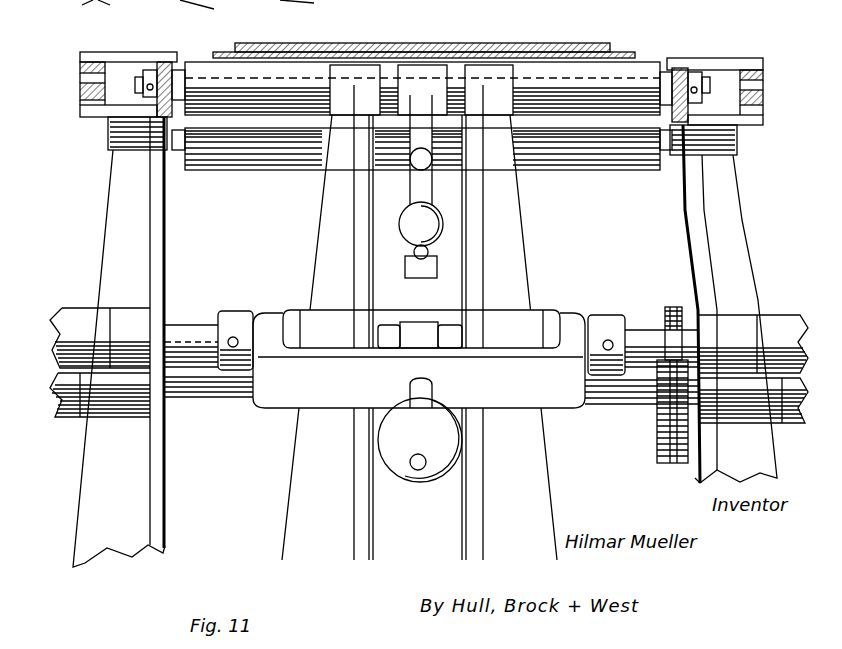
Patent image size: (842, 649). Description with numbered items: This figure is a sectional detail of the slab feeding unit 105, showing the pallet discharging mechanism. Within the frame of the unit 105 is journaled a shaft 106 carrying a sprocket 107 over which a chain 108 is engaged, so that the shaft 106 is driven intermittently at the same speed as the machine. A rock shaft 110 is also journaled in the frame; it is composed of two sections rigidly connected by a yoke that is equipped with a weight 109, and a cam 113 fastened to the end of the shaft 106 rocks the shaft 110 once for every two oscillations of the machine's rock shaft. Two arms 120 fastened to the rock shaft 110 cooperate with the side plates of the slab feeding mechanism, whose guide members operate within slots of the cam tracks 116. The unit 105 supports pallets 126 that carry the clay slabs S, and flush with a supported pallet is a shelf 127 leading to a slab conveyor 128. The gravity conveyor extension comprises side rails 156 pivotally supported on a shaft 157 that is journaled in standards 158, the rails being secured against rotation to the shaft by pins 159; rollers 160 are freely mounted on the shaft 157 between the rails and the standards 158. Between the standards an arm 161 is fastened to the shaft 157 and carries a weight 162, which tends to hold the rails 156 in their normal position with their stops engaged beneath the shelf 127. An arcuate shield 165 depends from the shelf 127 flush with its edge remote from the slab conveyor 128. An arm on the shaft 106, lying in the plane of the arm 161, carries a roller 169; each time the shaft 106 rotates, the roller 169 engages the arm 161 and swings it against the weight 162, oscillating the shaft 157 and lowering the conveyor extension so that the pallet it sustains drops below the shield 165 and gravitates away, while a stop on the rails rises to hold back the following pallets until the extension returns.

The clay slab S is at (415, 43).
The slab feeding unit 105 is at (114, 237).
The shaft 106 is at (233, 400).
The sprocket 107 is at (657, 432).
The chain 108 is at (668, 306).
The weight 109 is at (420, 430).
The rock shaft 110 is at (198, 330).
The cam 113 is at (66, 414).
The cam tracks 116 is at (80, 80).
The arms 120 is at (77, 316).
The pallets 126 is at (628, 56).
The shelf 127 is at (170, 62).
The slab conveyor 128 is at (641, 160).
The side rails 156 is at (178, 114).
The shaft 157 is at (141, 78).
The standards 158 is at (322, 221).
The pins 159 is at (680, 67).
The rollers 160 is at (213, 63).
The arm 161 is at (433, 263).
The weight 162 is at (399, 234).
The arcuate shield 165 is at (290, 150).
The roller 169 is at (423, 323).